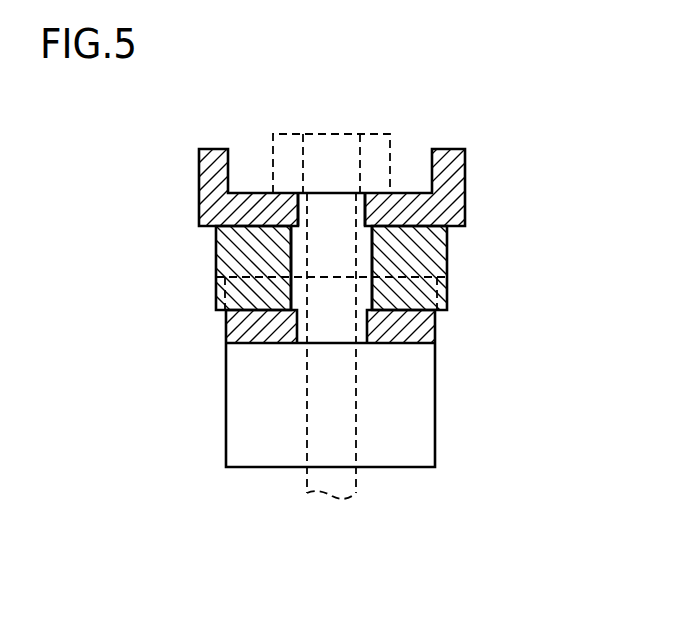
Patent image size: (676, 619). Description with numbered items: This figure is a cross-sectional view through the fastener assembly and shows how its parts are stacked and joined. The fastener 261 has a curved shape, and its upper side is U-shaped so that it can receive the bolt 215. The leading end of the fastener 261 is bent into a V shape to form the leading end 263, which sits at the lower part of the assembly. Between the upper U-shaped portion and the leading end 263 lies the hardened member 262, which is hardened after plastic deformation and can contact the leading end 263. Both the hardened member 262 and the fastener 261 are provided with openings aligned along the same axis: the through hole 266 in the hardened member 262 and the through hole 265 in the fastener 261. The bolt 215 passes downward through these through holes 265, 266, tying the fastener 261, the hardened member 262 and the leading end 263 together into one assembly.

The bolt 215 is at (375, 132).
The fastener 261 is at (452, 173).
The hardened member 262 is at (430, 250).
The leading end 263 is at (402, 457).
The through hole 265 is at (300, 222).
The through hole 266 is at (286, 261).